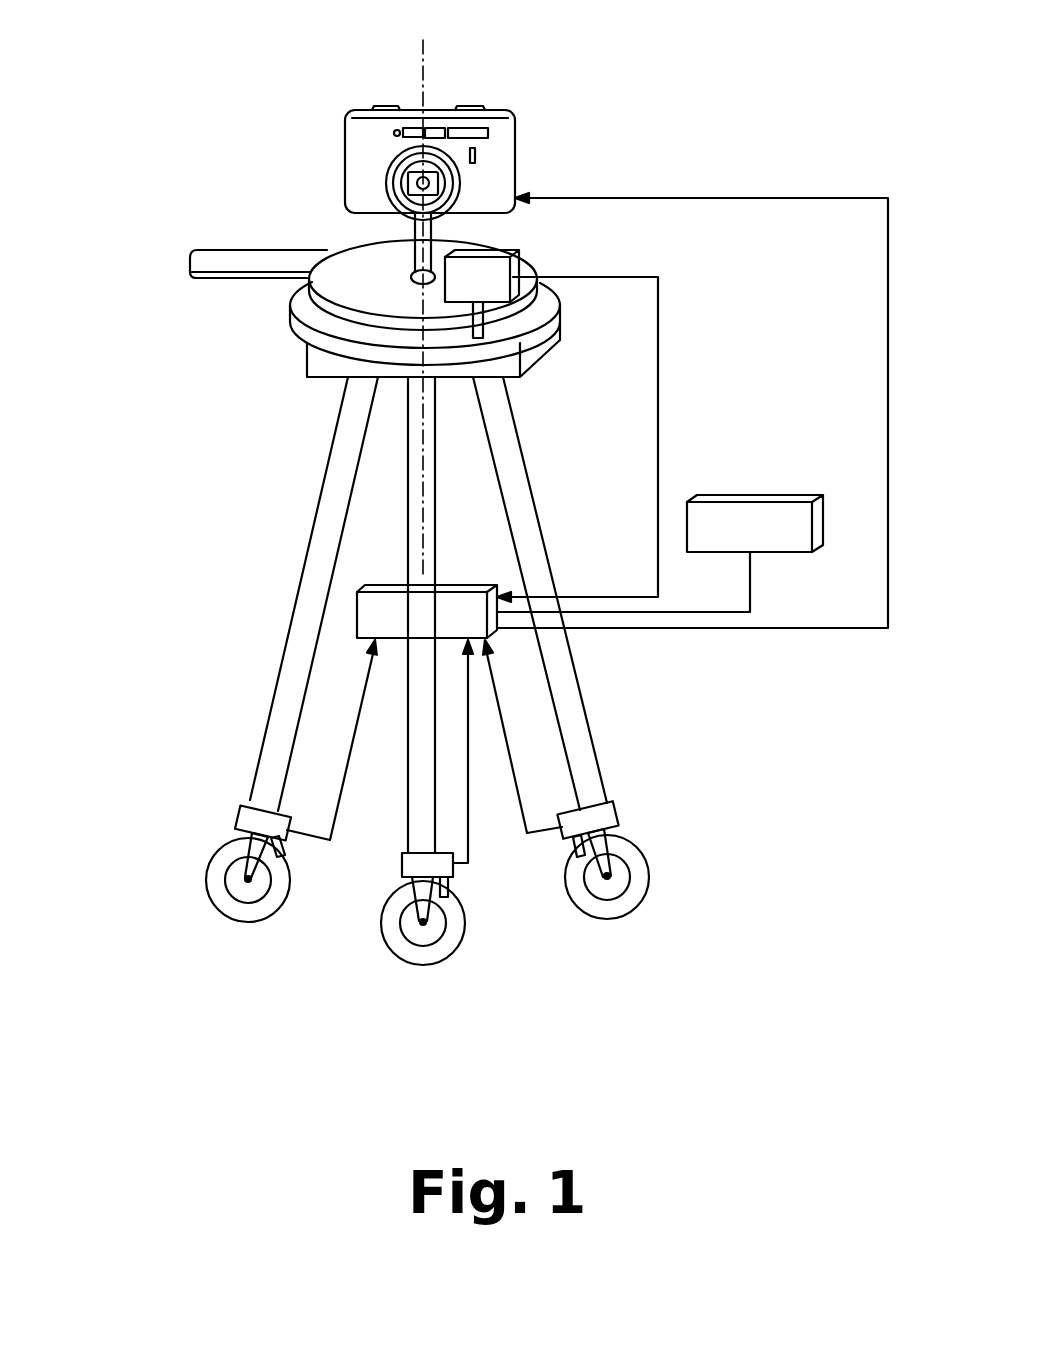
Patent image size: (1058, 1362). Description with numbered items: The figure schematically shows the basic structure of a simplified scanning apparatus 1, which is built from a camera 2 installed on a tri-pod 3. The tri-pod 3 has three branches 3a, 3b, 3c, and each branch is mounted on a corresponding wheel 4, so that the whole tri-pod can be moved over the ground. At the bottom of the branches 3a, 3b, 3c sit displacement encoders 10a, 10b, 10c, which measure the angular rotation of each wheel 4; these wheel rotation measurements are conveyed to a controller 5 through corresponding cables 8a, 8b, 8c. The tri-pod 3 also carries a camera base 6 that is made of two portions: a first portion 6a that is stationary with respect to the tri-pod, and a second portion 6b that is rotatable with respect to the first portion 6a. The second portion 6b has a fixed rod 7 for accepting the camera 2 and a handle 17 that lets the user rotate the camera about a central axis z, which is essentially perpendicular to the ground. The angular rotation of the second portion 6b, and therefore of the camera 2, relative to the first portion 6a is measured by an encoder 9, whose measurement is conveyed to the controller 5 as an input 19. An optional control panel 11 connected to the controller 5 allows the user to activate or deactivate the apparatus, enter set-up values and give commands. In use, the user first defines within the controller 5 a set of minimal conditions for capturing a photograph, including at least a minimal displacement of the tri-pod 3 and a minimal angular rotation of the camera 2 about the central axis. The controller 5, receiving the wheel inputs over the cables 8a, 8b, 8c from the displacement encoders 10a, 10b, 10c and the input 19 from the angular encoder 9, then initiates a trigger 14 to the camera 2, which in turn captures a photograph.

The scanning apparatus 1 is at (158, 388).
The camera 2 is at (488, 108).
The tri-pod 3 is at (395, 615).
The tri-pod branch 3a is at (515, 497).
The tri-pod branch 3b is at (418, 784).
The tri-pod branch 3c is at (342, 450).
The wheel 4 is at (242, 890).
The controller 5 is at (445, 608).
The camera base 6 is at (386, 262).
The first base portion 6a is at (307, 315).
The second base portion 6b is at (333, 280).
The fixed rod 7 is at (413, 228).
The cable 8a is at (343, 785).
The cable 8b is at (470, 815).
The cable 8c is at (503, 745).
The encoder 9 is at (493, 275).
The displacement encoder 10a is at (250, 825).
The displacement encoder 10b is at (400, 864).
The displacement encoder 10c is at (615, 812).
The control panel 11 is at (738, 515).
The trigger 14 is at (887, 357).
The support arm 17 is at (218, 260).
The input 19 is at (660, 362).
The central axis z is at (421, 57).